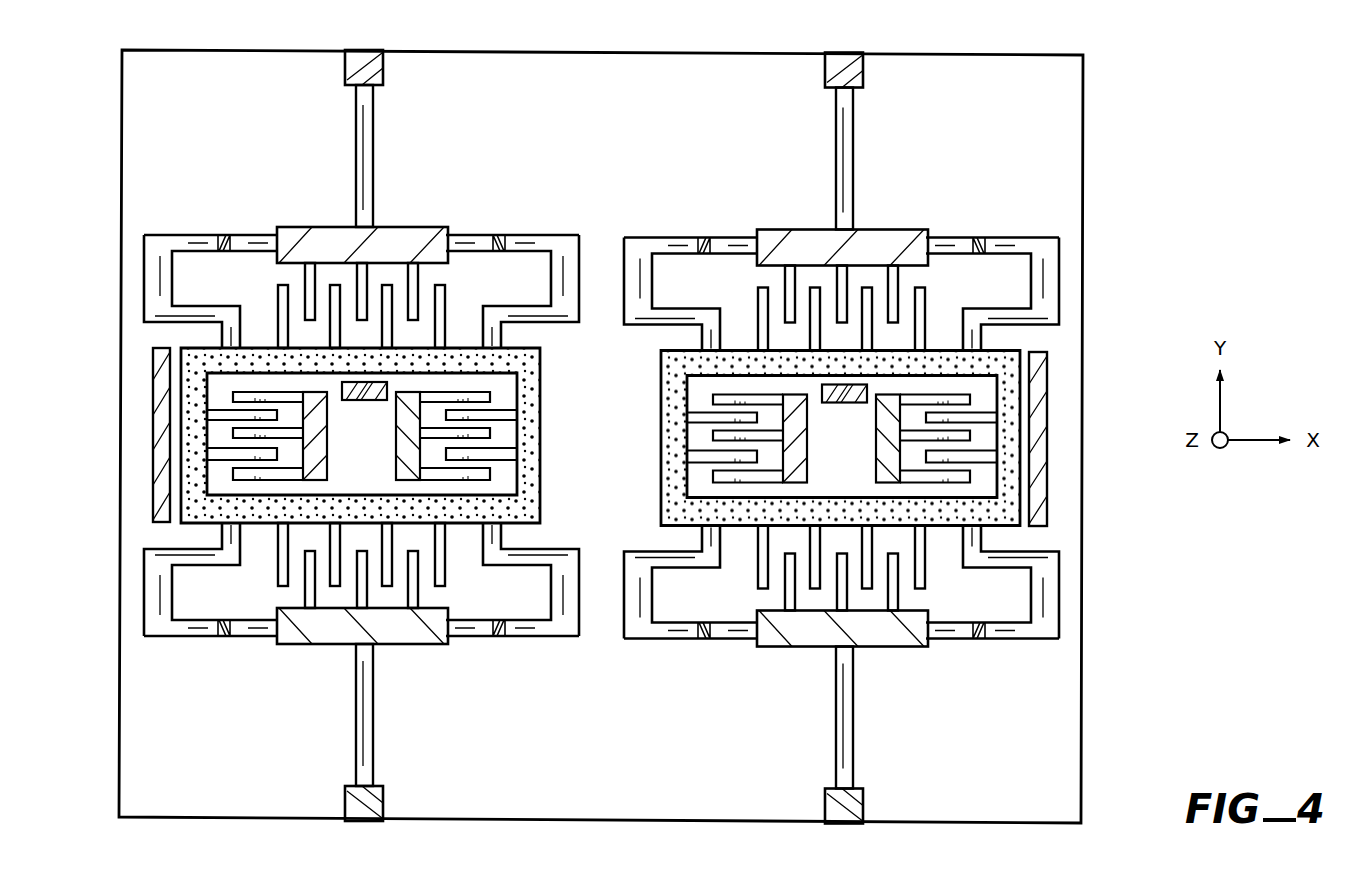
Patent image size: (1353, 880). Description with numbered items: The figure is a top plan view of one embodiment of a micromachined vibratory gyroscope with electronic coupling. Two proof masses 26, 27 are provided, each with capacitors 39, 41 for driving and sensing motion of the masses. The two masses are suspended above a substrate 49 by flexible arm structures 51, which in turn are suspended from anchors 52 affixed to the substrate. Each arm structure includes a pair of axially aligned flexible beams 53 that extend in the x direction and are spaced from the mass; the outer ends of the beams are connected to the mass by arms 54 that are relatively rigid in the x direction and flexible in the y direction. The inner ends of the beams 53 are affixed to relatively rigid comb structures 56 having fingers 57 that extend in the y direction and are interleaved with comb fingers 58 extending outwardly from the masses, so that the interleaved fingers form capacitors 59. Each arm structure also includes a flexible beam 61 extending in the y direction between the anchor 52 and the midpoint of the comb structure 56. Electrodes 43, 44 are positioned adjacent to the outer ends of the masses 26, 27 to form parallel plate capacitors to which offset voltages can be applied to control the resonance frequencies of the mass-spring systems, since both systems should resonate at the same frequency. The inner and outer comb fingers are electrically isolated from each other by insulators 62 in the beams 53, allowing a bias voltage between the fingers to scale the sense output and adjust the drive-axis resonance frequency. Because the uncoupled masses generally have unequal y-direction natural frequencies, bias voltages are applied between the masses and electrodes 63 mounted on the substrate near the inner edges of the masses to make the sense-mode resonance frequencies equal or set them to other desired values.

The proof mass 26 is at (541, 380).
The proof mass 27 is at (661, 489).
The capacitor 39 is at (218, 437).
The capacitor 41 is at (503, 438).
The electrode 43 is at (153, 400).
The electrode 44 is at (1040, 470).
The substrate 49 is at (588, 96).
The flexible arm structure 51 is at (142, 232).
The anchor 52 is at (345, 76).
The flexible beam 53 is at (225, 233).
The arm 54 is at (155, 284).
The comb structure 56 is at (333, 228).
The comb finger 57 is at (420, 270).
The comb finger 58 is at (282, 300).
The capacitor 59 is at (388, 262).
The flexible beam 61 is at (367, 122).
The insulator 62 is at (498, 234).
The electrode 63 is at (370, 401).